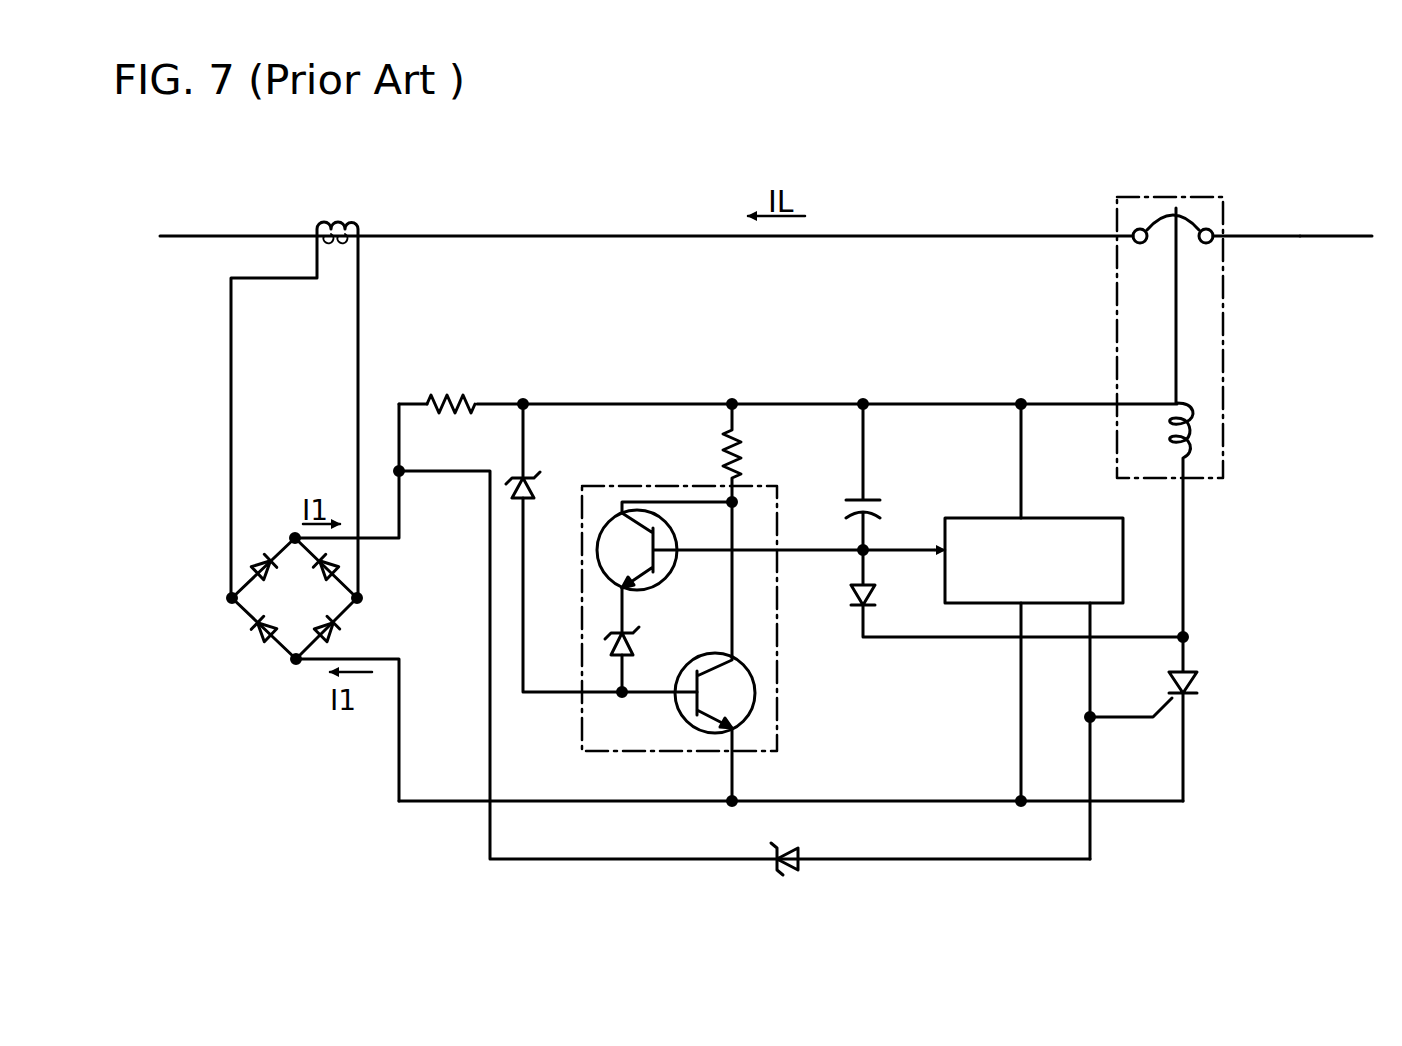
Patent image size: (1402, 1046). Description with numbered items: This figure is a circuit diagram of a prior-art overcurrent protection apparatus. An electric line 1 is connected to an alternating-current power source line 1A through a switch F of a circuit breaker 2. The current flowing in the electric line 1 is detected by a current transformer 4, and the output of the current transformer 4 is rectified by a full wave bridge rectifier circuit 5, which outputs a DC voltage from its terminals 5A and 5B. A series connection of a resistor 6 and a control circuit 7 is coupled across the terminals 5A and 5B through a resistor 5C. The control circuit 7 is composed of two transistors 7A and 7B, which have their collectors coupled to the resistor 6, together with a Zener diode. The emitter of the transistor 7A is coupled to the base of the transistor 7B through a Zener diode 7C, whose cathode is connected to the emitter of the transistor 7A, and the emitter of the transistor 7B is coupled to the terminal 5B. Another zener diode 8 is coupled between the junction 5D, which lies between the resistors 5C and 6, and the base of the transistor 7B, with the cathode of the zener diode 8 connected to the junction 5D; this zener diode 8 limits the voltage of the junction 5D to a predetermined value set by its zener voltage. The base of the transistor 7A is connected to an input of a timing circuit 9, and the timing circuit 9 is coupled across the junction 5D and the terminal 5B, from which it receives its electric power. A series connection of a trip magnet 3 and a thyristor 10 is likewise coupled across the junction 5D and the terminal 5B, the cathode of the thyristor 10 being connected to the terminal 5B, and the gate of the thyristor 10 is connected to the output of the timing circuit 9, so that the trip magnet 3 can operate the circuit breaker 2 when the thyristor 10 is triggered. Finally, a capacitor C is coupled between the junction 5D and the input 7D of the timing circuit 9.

The electric line 1 is at (932, 236).
The power source line 1A is at (1300, 236).
The circuit breaker 2 is at (1226, 327).
The trip magnet 3 is at (1198, 441).
The current transformer 4 is at (357, 228).
The full wave bridge rectifier circuit 5 is at (287, 634).
The terminal 5A is at (294, 538).
The terminal 5B is at (296, 666).
The resistor 5C is at (450, 396).
The junction 5D is at (523, 402).
The resistor 6 is at (746, 462).
The control circuit 7 is at (786, 738).
The transistor 7A is at (652, 592).
The transistor 7B is at (738, 736).
The Zener diode 7C is at (617, 658).
The input of the timing circuit 7D is at (902, 560).
The zener diode 8 is at (536, 486).
The timing circuit 9 is at (1070, 518).
The thyristor 10 is at (1190, 674).
The capacitor C is at (882, 510).
The switch F is at (1177, 200).